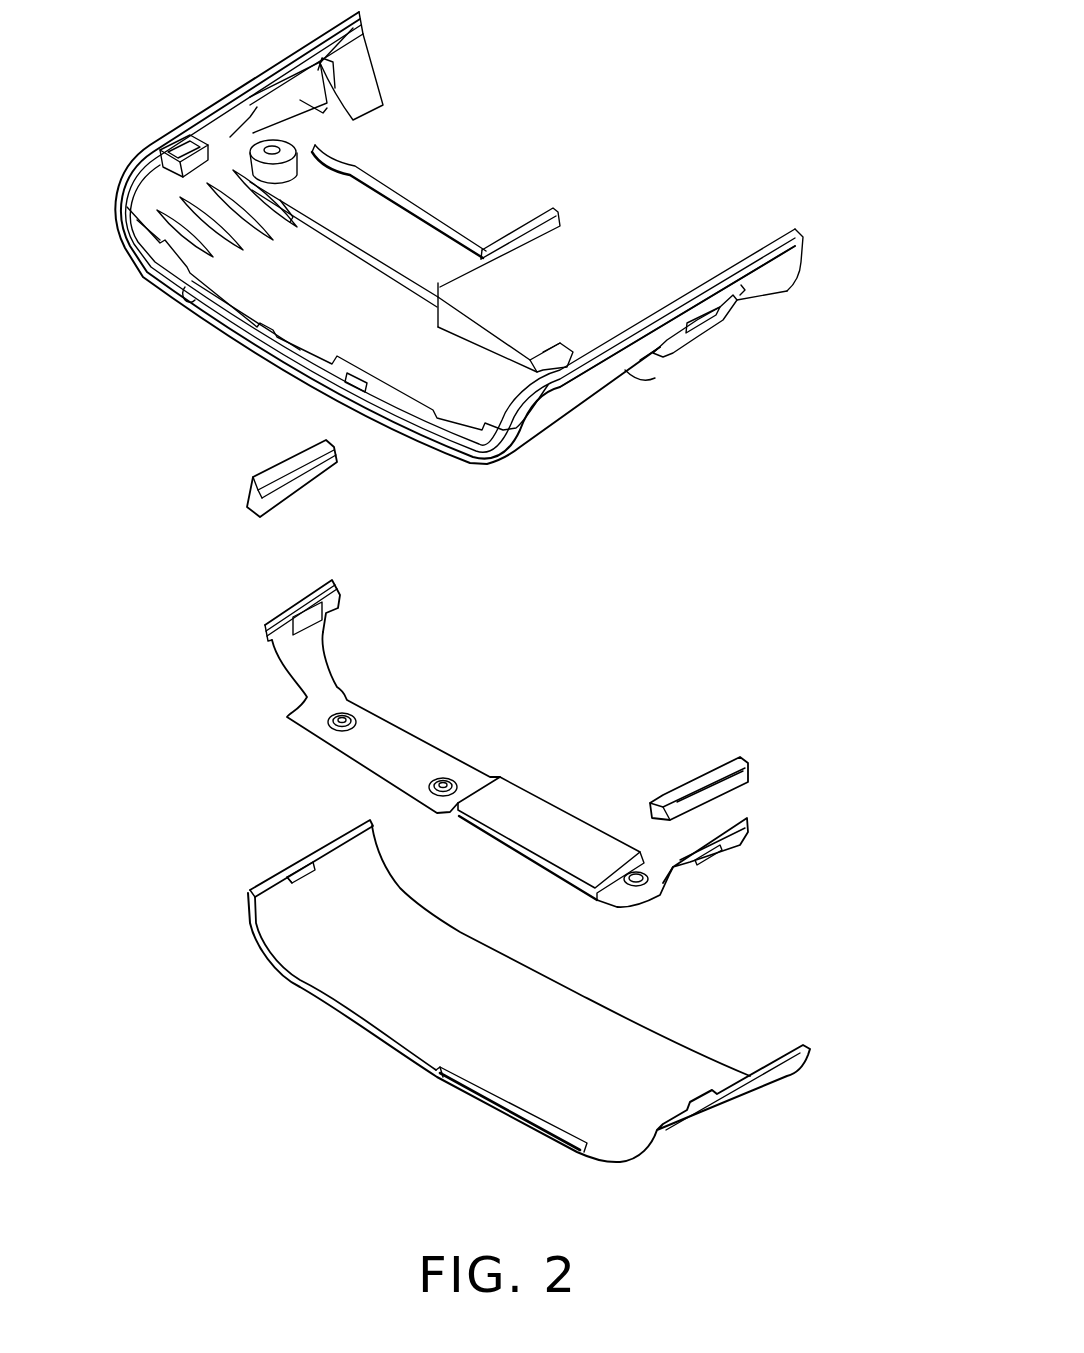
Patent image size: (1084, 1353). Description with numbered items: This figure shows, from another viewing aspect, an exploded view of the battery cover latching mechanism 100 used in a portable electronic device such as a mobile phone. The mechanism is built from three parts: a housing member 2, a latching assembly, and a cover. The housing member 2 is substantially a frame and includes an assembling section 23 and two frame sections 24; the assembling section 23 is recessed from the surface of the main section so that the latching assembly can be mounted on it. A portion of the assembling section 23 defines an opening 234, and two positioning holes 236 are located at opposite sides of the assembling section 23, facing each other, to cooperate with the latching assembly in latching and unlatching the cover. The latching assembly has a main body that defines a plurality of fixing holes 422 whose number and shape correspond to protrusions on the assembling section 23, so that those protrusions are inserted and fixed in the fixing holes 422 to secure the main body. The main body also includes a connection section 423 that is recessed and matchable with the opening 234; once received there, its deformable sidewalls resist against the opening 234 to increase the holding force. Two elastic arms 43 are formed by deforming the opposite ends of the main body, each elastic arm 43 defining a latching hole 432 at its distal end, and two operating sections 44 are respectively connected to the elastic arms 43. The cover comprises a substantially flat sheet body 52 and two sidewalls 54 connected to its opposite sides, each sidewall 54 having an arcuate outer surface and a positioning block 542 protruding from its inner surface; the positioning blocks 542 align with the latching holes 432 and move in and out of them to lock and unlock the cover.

The battery cover latching mechanism 100 is at (168, 60).
The housing member 2 is at (642, 167).
The assembling section 23 is at (405, 230).
The frame section 24 is at (361, 87).
The opening 234 is at (591, 318).
The positioning hole 236 is at (688, 335).
The elastic arm 43 is at (297, 660).
The latching hole 432 is at (313, 623).
The fixing hole 422 is at (347, 717).
The connection section 423 is at (523, 810).
The operating section 44 is at (723, 783).
The sheet body 52 is at (382, 1002).
The sidewall 54 is at (298, 945).
The positioning block 542 is at (307, 863).